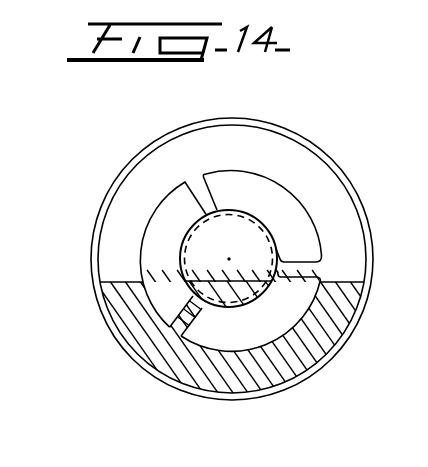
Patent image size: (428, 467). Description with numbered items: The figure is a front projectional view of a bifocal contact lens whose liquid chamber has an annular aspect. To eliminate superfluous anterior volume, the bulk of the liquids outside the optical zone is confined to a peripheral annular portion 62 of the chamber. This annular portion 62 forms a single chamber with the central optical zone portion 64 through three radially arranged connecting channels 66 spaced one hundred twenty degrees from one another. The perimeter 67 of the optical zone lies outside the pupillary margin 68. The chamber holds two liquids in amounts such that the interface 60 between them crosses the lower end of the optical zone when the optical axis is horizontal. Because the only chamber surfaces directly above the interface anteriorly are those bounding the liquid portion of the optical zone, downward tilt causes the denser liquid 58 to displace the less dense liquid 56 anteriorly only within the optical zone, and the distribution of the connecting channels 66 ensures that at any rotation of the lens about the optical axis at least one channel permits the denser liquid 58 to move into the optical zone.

The less dense liquid 56 is at (117, 250).
The denser liquid 58 is at (140, 330).
The interface 60 is at (127, 283).
The annular portion 62 is at (205, 142).
The optical zone portion 64 is at (262, 257).
The connecting channels 66 is at (198, 193).
The perimeter of the optical zone 67 is at (242, 210).
The pupillary margin 68 is at (263, 223).